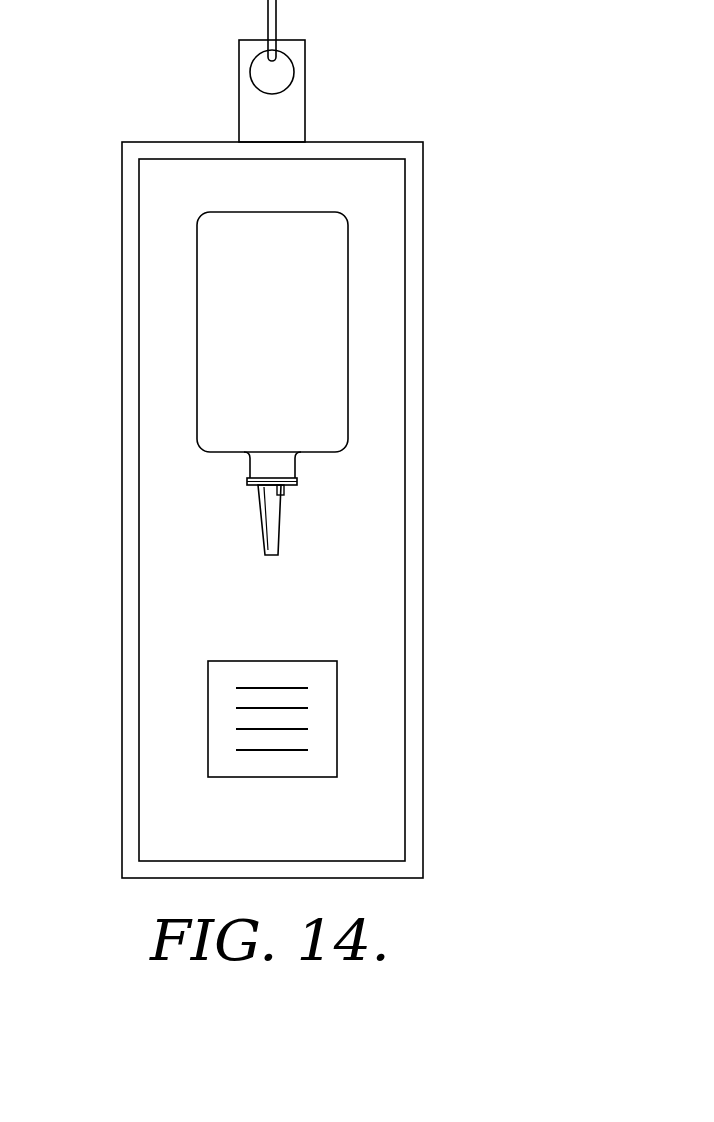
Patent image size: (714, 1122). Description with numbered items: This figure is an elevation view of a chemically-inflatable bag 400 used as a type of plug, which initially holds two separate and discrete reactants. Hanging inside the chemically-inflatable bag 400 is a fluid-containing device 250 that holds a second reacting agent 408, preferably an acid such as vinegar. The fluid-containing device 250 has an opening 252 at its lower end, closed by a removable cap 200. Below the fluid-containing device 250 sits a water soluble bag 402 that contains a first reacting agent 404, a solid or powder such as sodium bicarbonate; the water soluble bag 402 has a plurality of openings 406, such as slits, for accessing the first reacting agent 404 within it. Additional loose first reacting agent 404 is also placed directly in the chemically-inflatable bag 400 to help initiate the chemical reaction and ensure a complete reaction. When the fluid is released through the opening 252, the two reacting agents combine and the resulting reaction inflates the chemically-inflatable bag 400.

The chemically-inflatable bag 400 is at (476, 423).
The fluid-containing device 250 is at (197, 343).
The second reacting agent 408 is at (293, 345).
The opening 252 is at (285, 467).
The removable cap 200 is at (280, 525).
The water soluble bag 402 is at (338, 680).
The openings 406 is at (255, 752).
The first reacting agent 404 is at (322, 766).